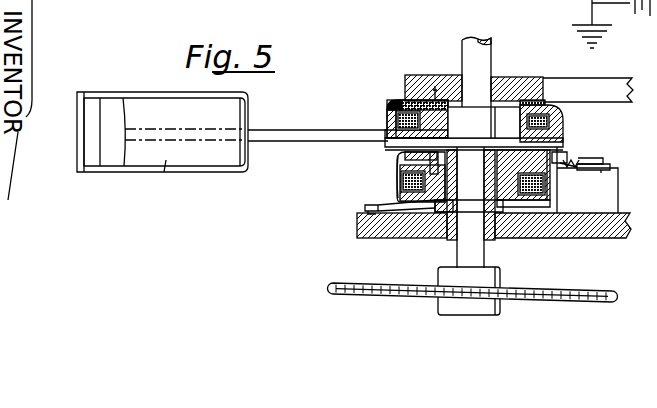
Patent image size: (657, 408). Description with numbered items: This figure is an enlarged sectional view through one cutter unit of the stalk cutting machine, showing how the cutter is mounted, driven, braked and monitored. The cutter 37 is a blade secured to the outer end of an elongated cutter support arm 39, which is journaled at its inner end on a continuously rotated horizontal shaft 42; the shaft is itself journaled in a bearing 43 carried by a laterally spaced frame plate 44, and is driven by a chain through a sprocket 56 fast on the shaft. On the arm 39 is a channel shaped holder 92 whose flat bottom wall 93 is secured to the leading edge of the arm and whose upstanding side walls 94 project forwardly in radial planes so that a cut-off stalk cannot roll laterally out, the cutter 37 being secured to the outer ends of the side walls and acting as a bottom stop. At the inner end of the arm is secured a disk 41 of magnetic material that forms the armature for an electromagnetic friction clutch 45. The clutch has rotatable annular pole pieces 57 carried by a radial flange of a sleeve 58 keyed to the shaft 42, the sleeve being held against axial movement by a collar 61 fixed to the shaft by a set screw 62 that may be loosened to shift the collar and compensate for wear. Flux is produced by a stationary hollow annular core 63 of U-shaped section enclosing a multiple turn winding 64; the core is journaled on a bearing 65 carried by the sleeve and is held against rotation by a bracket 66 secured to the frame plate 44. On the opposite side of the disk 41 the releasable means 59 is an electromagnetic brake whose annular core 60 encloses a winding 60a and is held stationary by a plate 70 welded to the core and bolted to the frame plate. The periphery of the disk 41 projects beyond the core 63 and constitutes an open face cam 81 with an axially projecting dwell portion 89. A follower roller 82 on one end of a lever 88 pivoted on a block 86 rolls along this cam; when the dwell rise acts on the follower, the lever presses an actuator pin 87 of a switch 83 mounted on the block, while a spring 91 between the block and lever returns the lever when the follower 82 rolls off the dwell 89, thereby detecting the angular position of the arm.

The cutter 37 is at (78, 141).
The cutter support arm 39 is at (297, 137).
The armature disk 41 is at (388, 135).
The horizontal shaft 42 is at (490, 46).
The bearing 43 is at (500, 78).
The frame plate 44 is at (542, 80).
The electromagnetic friction clutch 45 is at (392, 190).
The sprocket 56 is at (610, 290).
The rotatable annular pole pieces 57 is at (432, 149).
The sleeve 58 is at (455, 186).
The releasable means (electromagnetic friction brake) 59 is at (393, 98).
The brake core 60 is at (414, 98).
The brake winding 60a is at (376, 119).
The collar 61 is at (563, 225).
The set screw 62 is at (447, 216).
The clutch core 63 is at (548, 208).
The clutch winding 64 is at (548, 190).
The bearing 65 is at (506, 203).
The bracket 66 is at (366, 206).
The plate 70 is at (546, 101).
The open face cam 81 is at (386, 157).
The follower roller 82 is at (562, 166).
The switch 83 is at (605, 180).
The block 86 is at (618, 212).
The actuator pin 87 is at (611, 170).
The lever 88 is at (604, 161).
The dwell portion 89 is at (572, 147).
The spring 91 is at (578, 161).
The holder 92 is at (165, 158).
The bottom wall 93 is at (207, 123).
The side walls 94 is at (180, 93).